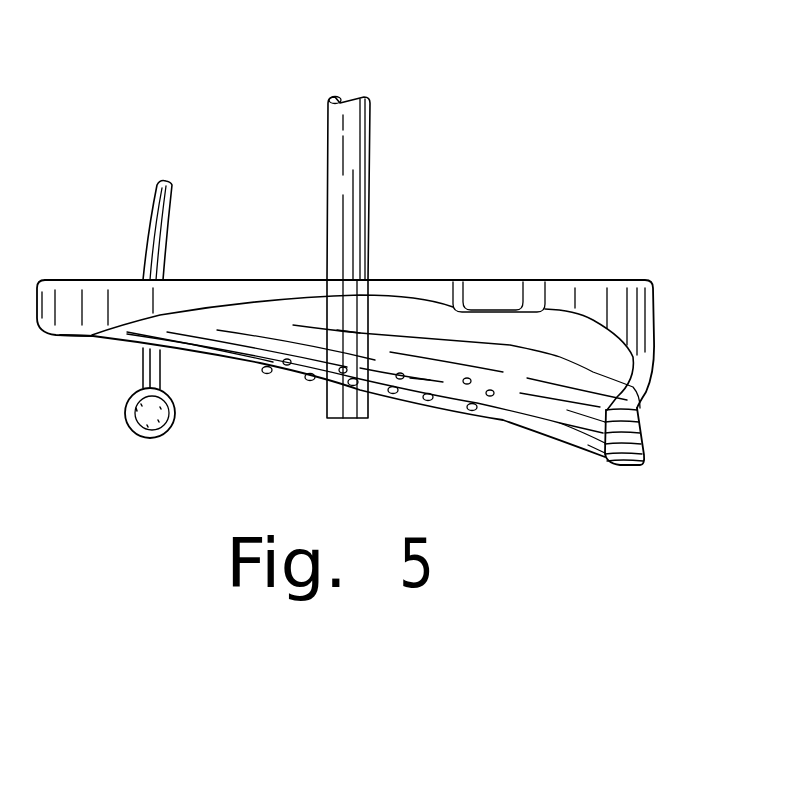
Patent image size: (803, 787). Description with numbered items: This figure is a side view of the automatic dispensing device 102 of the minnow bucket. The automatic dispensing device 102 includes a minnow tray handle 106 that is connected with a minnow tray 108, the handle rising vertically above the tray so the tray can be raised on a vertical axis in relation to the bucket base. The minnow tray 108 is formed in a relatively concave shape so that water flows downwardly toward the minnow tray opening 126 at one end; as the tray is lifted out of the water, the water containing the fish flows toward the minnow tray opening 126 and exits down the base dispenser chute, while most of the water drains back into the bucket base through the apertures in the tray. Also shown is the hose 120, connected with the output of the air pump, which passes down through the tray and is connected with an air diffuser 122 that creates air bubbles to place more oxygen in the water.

The automatic dispensing device 102 is at (490, 101).
The minnow tray handle 106 is at (332, 144).
The minnow tray 108 is at (632, 284).
The hose 120 is at (145, 237).
The air diffuser 122 is at (125, 413).
The minnow tray opening 126 is at (642, 424).